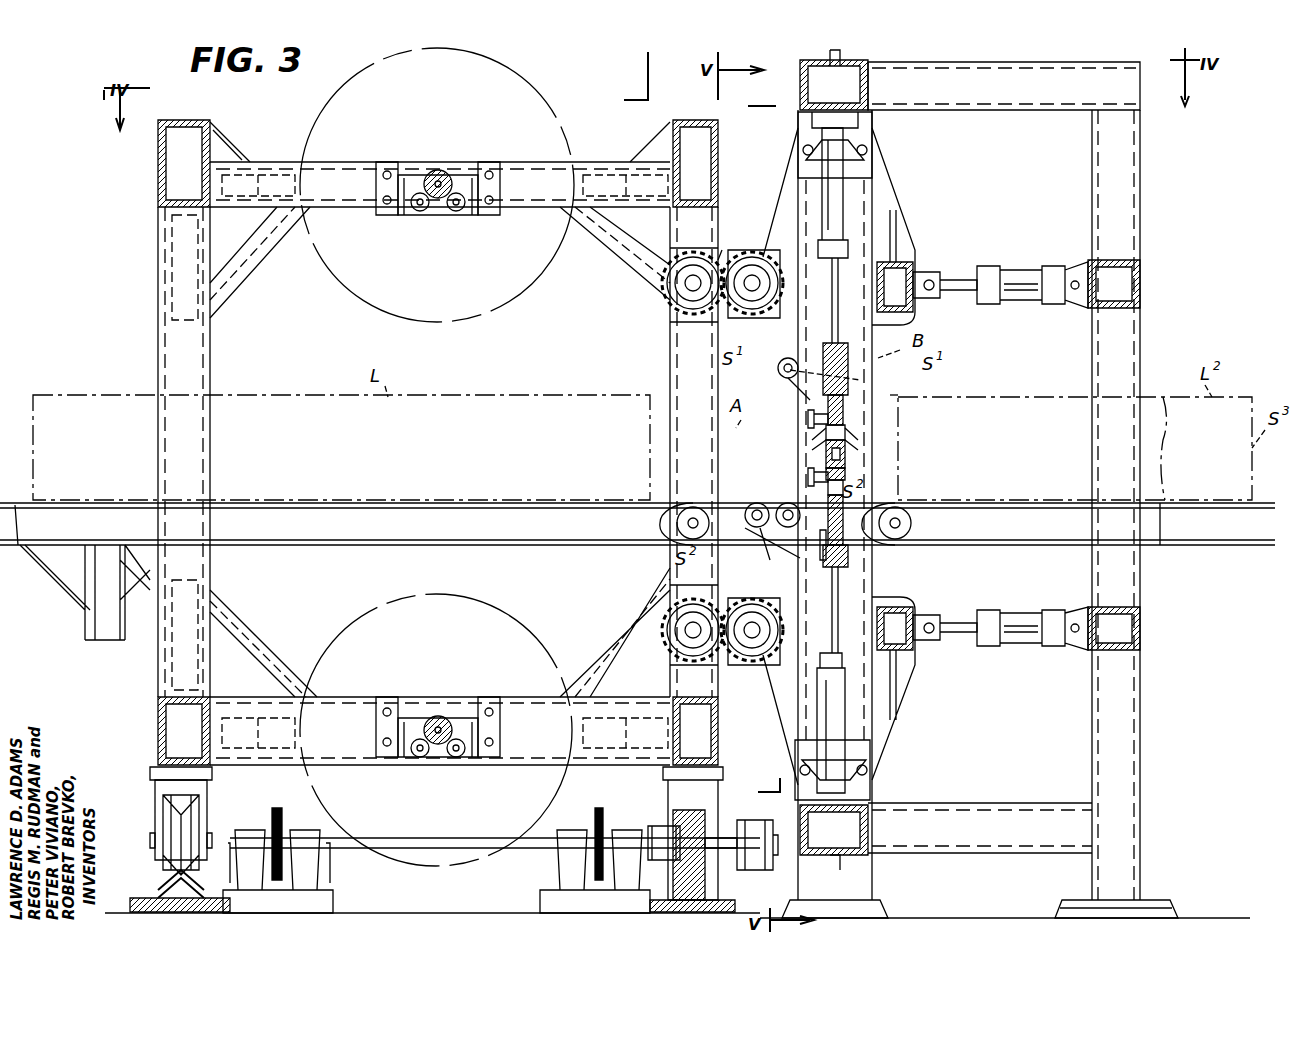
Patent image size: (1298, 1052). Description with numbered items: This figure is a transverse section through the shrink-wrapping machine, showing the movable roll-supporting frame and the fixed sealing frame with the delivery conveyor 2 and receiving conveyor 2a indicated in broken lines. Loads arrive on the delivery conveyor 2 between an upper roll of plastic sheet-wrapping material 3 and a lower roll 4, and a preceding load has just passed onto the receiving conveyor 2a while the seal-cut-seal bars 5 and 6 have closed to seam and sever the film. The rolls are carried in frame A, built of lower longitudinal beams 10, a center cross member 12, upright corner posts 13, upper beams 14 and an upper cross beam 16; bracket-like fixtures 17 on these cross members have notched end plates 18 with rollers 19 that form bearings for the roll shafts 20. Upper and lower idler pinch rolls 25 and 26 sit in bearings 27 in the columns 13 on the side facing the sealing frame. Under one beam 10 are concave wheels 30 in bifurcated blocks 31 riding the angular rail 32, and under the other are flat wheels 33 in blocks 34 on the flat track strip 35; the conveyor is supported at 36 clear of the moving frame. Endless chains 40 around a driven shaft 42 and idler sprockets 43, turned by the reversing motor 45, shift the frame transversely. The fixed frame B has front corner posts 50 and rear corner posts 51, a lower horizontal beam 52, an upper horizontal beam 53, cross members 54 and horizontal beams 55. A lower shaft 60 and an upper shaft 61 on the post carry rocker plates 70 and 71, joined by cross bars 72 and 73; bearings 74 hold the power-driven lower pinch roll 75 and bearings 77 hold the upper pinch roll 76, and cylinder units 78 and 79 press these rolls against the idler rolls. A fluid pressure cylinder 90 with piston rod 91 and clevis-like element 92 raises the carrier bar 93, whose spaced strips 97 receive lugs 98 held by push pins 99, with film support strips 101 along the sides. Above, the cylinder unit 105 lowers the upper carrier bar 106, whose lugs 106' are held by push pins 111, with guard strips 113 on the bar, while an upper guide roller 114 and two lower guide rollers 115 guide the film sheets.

The delivery conveyor 2 is at (415, 540).
The receiving conveyor 2a is at (1212, 548).
The upper roll of plastic sheet-wrapping material 3 is at (382, 290).
The lower roll of plastic sheet-wrapping material 4 is at (468, 605).
The upper seal-cut-seal bar 5 is at (822, 405).
The lower seal-cut-seal bar 6 is at (822, 498).
The lower longitudinal beam 10 is at (158, 705).
The center cross member 12 is at (345, 697).
The upright corner post 13 is at (158, 356).
The upper beam 14 is at (158, 166).
The upper cross beam 16 is at (362, 207).
The bracket-like fixture 17 is at (462, 212).
The end plate 18 is at (405, 212).
The roller 19 is at (430, 212).
The roll shaft 20 is at (437, 170).
The upper idler pinch roll 25 is at (668, 298).
The lower idler pinch roll 26 is at (672, 605).
The pinch roll bearing 27 is at (678, 322).
The wheel 30 is at (160, 815).
The bifurcated block 31 is at (150, 782).
The angular rail 32 is at (158, 892).
The flat-periphery wheel 33 is at (685, 868).
The wheel block 34 is at (665, 800).
The flat track strip 35 is at (712, 905).
The conveyor support 36 is at (88, 612).
The endless chain 40 is at (270, 812).
The driven shaft 42 is at (655, 830).
The idler sprocket 43 is at (282, 820).
The reversing drive motor and speed reducer 45 is at (752, 825).
The front corner post 50 is at (872, 572).
The rear corner post 51 is at (1140, 574).
The lower horizontal beam 52 is at (868, 855).
The upper horizontal beam 53 is at (800, 88).
The cross member 54 is at (1002, 100).
The horizontal beam 55 is at (1140, 286).
The drive shaft 60 is at (875, 775).
The upper shaft 61 is at (875, 135).
The lower rocker plate 70 is at (912, 680).
The upper rocker plate 71 is at (885, 186).
The lower cross bar 72 is at (913, 612).
The upper cross bar 73 is at (905, 312).
The lower pinch roll bearing 74 is at (752, 598).
The power-driven lower pinch roll 75 is at (765, 665).
The power-driven upper pinch roll 76 is at (758, 258).
The upper pinch roll bearing 77 is at (752, 252).
The lower cylinder and piston unit 78 is at (1022, 620).
The upper cylinder and piston unit 79 is at (1022, 278).
The fluid pressure cylinder 90 is at (846, 718).
The piston rod 91 is at (822, 610).
The clevis-like element 92 is at (823, 556).
The carrier bar 93 is at (848, 535).
The spaced strip 97 is at (850, 480).
The lug 98 is at (850, 468).
The push pin 99 is at (810, 474).
The film sheet support strip 101 is at (820, 452).
The upper cylinder and piston unit 105 is at (822, 198).
The upper carrier bar 106 is at (869, 389).
The upstanding lug 106' is at (882, 425).
The push pin 111 is at (810, 420).
The guard strip 113 is at (814, 432).
The upper guide roller 114 is at (778, 370).
The lower guide roller 115 is at (762, 504).